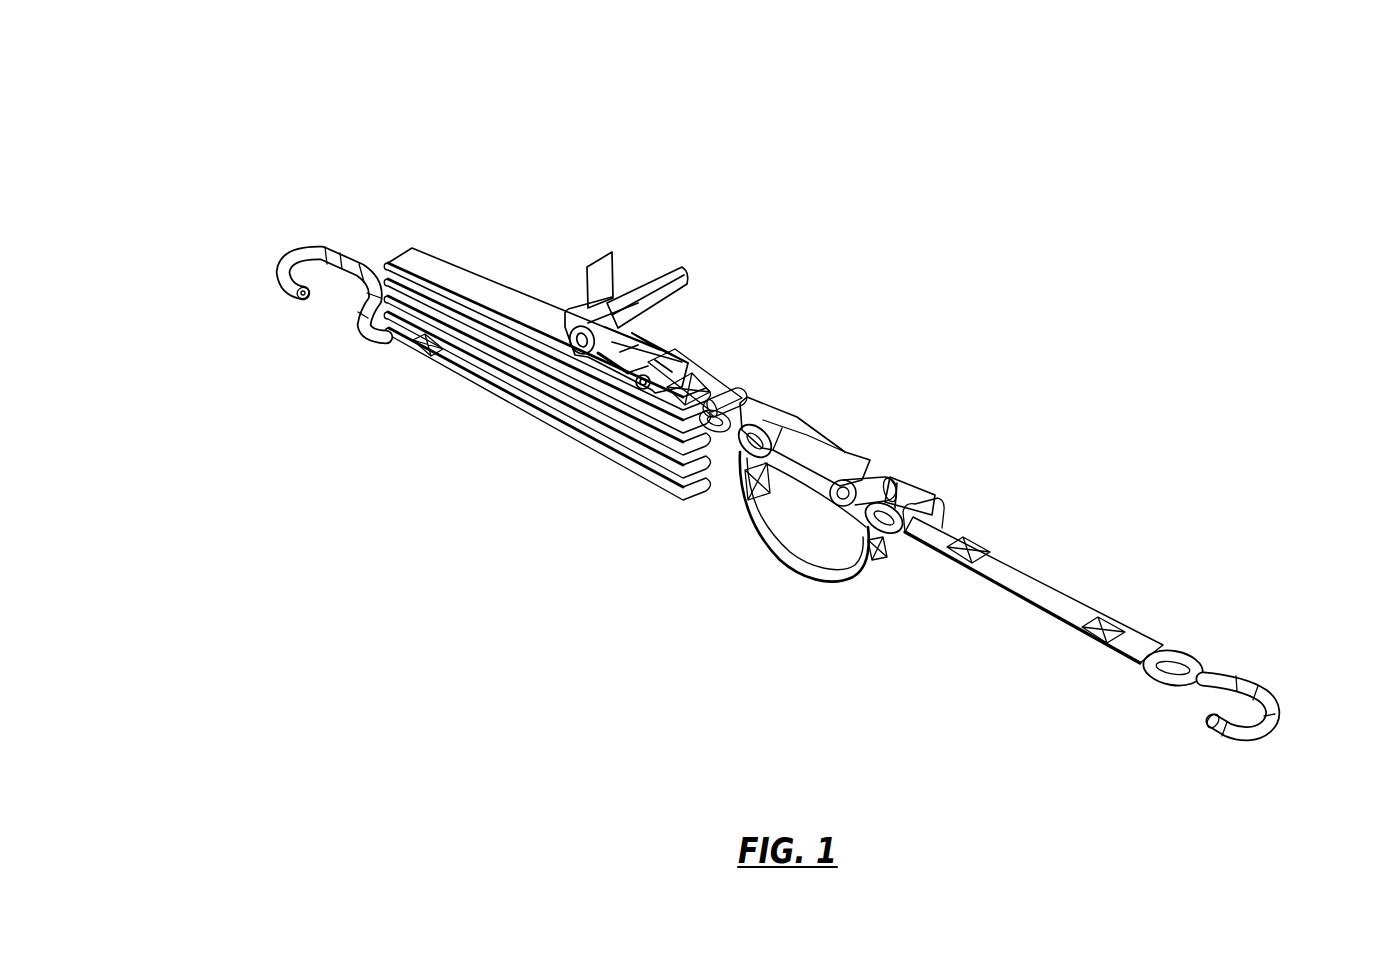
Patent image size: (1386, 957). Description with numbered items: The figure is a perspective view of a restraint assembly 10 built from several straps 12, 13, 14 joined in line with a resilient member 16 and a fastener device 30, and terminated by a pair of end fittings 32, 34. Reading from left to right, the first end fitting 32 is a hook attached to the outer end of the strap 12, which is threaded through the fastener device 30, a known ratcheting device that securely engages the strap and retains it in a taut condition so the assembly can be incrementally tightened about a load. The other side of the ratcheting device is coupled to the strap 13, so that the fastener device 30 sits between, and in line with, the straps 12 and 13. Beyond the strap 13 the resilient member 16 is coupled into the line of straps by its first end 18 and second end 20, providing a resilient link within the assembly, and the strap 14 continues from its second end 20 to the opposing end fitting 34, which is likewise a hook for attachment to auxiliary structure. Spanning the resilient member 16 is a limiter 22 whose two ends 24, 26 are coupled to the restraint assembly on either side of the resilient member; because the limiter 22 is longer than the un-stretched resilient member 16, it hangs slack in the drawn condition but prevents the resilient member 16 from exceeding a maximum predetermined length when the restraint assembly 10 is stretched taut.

The restraint assembly 10 is at (205, 150).
The strap 12 is at (447, 262).
The strap 13 is at (705, 388).
The strap 14 is at (1022, 565).
The resilient member 16 is at (829, 441).
The first end 18 is at (783, 410).
The second end 20 is at (875, 468).
The limiter 22 is at (787, 565).
The end 24 is at (740, 452).
The end 26 is at (873, 565).
The fastener device 30 is at (684, 262).
The end fitting 32 is at (292, 250).
The end fitting 34 is at (1272, 688).